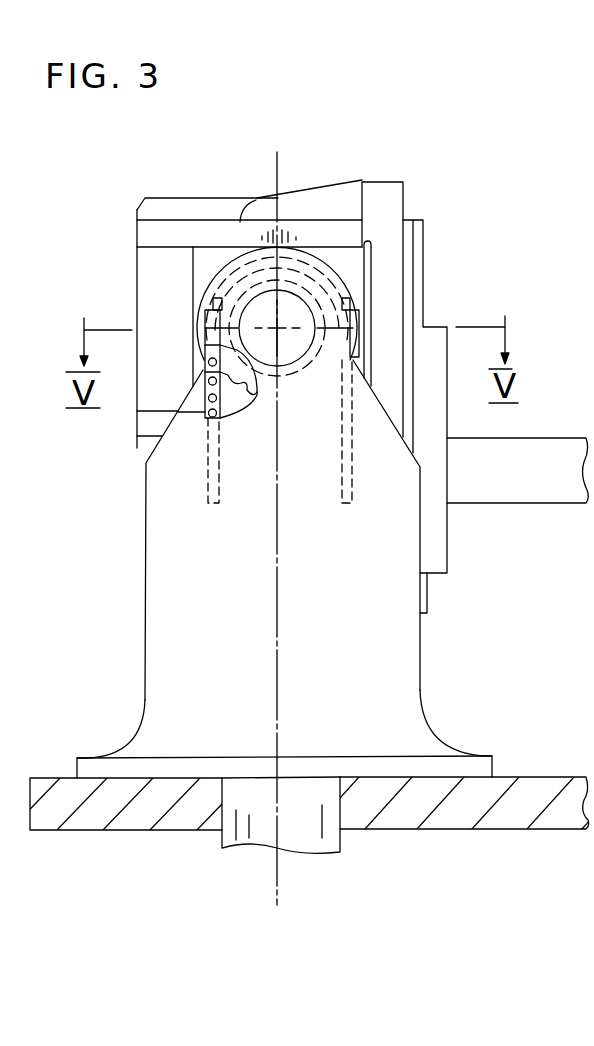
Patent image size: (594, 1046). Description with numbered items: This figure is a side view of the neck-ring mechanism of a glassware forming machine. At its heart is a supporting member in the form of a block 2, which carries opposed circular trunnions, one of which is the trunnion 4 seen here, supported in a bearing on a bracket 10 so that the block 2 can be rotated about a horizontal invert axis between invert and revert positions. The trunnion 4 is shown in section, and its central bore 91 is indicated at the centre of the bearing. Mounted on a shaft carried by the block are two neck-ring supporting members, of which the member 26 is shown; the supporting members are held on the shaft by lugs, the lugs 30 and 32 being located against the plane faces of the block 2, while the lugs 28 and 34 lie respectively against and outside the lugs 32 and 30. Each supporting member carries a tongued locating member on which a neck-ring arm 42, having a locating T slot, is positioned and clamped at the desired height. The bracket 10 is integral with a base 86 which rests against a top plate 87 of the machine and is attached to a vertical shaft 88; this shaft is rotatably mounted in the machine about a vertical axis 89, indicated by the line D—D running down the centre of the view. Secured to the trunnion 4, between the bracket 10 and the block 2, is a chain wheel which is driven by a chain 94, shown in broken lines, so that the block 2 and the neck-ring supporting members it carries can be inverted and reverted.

The block 2 is at (208, 266).
The trunnion 4 is at (335, 283).
The bracket 10 is at (247, 634).
The neck-ring supporting member 26 is at (392, 200).
The lug 28 is at (155, 210).
The lug 30 is at (150, 427).
The lug 32 is at (148, 236).
The lug 34 is at (148, 447).
The neck-ring arm 42 is at (516, 489).
The base 86 is at (145, 740).
The top plate 87 is at (458, 829).
The vertical shaft 88 is at (240, 845).
The vertical axis 89 is at (277, 170).
The bore 91 is at (296, 317).
The chain 94 is at (212, 503).